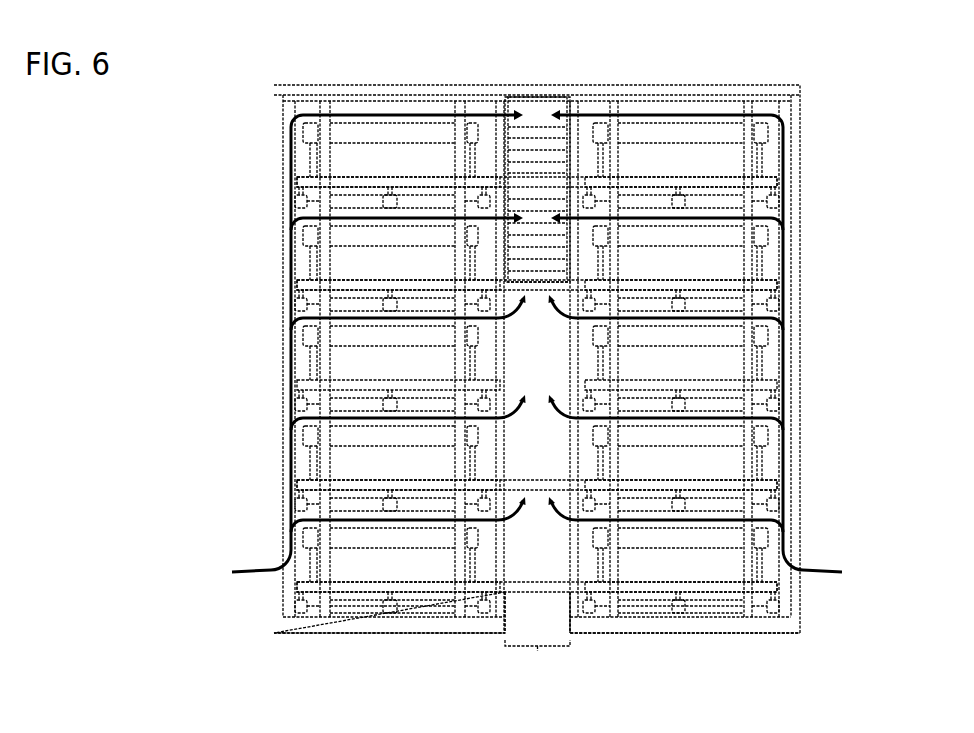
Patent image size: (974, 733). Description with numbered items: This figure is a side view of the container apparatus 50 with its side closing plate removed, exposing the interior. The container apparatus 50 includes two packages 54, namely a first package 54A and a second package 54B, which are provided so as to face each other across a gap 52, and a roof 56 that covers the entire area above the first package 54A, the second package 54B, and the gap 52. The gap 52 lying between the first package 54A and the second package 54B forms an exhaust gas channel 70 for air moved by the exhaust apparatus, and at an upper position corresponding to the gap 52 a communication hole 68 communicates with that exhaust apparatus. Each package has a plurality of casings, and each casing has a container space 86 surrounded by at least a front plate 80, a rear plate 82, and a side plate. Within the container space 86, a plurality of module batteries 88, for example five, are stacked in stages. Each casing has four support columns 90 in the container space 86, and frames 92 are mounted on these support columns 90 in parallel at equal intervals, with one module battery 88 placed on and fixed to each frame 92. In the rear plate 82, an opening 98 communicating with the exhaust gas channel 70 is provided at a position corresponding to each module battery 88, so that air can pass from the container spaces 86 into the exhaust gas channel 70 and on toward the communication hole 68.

The container apparatus 50 is at (119, 131).
The gap 52 is at (546, 660).
The package 54 is at (537, 660).
The first package 54A is at (723, 638).
The second package 54B is at (332, 638).
The roof 56 is at (582, 90).
The communication hole 68 is at (547, 115).
The exhaust gas channel 70 is at (537, 612).
The front plate 80 is at (283, 312).
The rear plate 82 is at (505, 384).
The container space 86 is at (295, 358).
The module battery 88 is at (306, 155).
The support column 90 is at (620, 163).
The frame 92 is at (408, 609).
The opening 98 is at (505, 324).